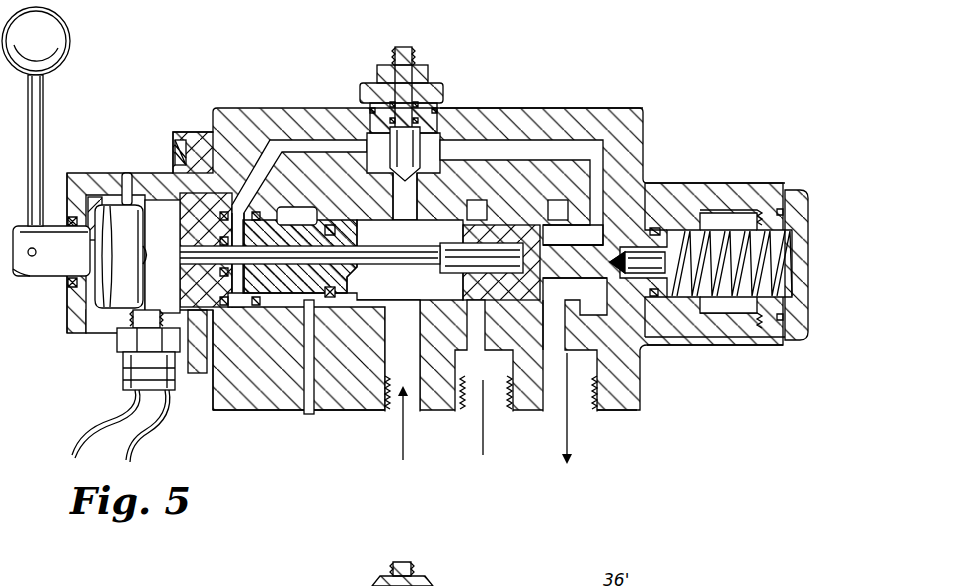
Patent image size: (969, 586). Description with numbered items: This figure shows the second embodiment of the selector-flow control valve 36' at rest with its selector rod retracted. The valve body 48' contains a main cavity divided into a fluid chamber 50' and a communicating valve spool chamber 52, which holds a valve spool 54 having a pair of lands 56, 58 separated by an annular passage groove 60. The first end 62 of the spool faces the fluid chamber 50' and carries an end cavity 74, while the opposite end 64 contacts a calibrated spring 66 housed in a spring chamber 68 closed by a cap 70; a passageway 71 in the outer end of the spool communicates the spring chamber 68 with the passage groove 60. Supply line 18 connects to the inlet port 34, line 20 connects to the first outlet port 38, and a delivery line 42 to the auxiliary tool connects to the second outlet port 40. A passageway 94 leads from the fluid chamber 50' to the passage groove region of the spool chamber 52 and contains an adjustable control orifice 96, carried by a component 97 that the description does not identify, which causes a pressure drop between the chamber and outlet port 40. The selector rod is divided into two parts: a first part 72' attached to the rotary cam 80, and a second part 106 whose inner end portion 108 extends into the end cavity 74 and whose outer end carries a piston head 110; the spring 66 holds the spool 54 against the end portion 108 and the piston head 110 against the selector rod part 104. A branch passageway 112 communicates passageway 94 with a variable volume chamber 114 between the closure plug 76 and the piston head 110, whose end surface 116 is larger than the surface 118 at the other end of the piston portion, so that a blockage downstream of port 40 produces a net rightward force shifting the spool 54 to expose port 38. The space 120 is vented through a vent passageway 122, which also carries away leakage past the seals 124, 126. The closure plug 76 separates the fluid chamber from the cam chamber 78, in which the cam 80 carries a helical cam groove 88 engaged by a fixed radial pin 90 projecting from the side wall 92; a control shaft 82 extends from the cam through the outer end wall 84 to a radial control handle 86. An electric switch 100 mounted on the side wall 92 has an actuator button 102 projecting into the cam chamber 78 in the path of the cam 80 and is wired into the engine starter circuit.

The selector-flow control valve 36' is at (425, 235).
The passageway 94 is at (548, 160).
The branch passageway 112 is at (300, 147).
The variable volume chamber 114 is at (239, 185).
The selector rod second part 106 is at (407, 199).
The surface 118 is at (345, 242).
The fluid chamber 50' is at (408, 340).
The cavity 74 is at (463, 252).
The first end of valve spool 62 is at (466, 237).
The inner end portion 108 is at (505, 205).
The valve spool chamber 52 is at (546, 237).
The land 56 is at (535, 291).
The first outlet port 38 is at (472, 350).
The inlet port 34 is at (388, 375).
The piston head 110 is at (282, 252).
The seal 126 is at (297, 216).
The seal 124 is at (338, 290).
The cam chamber 78 is at (152, 185).
The side wall 92 is at (165, 172).
The fitting 97 is at (440, 128).
The control orifice 96 is at (421, 155).
The valve spool 54 is at (586, 269).
The land 58 is at (672, 213).
The opposite end of valve spool 64 is at (715, 357).
The calibrated spring 66 is at (752, 315).
The spring chamber 68 is at (718, 320).
The passageway 71 is at (645, 250).
The annular passage groove 60 is at (620, 260).
The cap 70 is at (808, 306).
The selector rod first part 72' is at (290, 239).
The outer end wall 84 is at (60, 196).
The helical cam groove 88 is at (98, 196).
The fixed radial pin 90 is at (127, 170).
The rotary cam 80 is at (95, 300).
The selector rod part 104 is at (143, 270).
The control shaft 82 is at (25, 280).
The radial control handle 86 is at (45, 110).
The actuator button 102 is at (128, 332).
The electric switch 100 is at (120, 362).
The closure plug 76 is at (198, 375).
The end surface 116 is at (233, 308).
The space 120 is at (287, 308).
The vent passageway 122 is at (310, 410).
The line 18 is at (400, 440).
The line 20 is at (478, 438).
The second outlet port 40 is at (556, 350).
The delivery line 42 is at (570, 434).
The valve body 48' is at (647, 420).